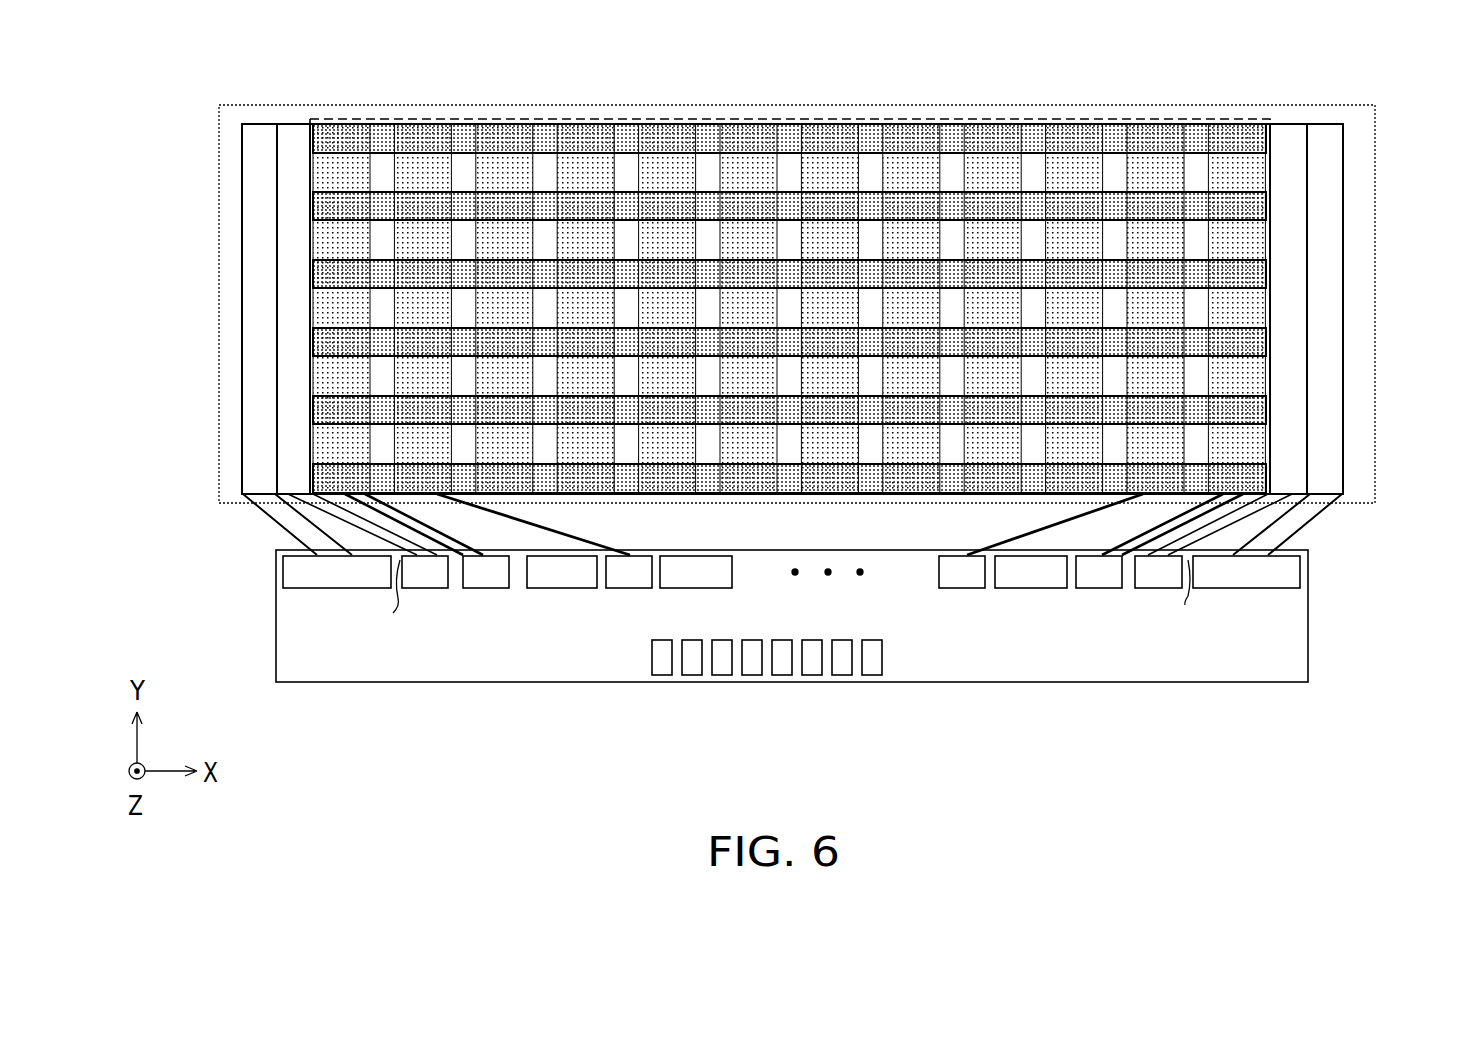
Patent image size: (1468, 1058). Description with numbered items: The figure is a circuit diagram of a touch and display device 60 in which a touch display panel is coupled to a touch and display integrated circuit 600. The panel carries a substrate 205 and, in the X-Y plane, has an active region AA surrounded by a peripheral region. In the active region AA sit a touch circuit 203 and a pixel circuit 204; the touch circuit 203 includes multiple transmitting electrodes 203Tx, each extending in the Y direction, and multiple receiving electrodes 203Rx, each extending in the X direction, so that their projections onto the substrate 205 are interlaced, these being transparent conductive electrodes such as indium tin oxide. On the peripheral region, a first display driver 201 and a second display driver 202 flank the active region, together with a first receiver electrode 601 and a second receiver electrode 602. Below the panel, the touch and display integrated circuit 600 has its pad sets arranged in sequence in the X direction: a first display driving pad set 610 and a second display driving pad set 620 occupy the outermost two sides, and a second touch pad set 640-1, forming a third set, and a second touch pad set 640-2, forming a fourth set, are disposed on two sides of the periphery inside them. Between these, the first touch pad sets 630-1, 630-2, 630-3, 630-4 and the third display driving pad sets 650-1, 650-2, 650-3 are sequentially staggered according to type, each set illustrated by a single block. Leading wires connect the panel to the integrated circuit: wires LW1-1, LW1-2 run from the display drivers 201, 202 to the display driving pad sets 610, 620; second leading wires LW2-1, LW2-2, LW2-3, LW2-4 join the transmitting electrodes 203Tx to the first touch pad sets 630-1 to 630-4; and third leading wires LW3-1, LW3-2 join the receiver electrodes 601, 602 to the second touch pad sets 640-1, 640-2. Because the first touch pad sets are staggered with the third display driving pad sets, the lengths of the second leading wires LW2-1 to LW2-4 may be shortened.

The touch display device 60 is at (1407, 796).
The substrate 205 is at (218, 115).
The first display driver 201 is at (260, 133).
The second display driver 202 is at (1325, 133).
The first receiver electrode 601 is at (297, 133).
The second receiver electrode 602 is at (1290, 133).
The active region AA is at (790, 248).
The touch circuit 203 is at (789, 263).
The pixel circuit 204 is at (1138, 87).
The transmitting electrodes 203Tx is at (347, 167).
The receiving electrodes 203Rx is at (468, 138).
The first display driver wiring LW1-1 is at (283, 515).
The second display driver wiring LW1-2 is at (1307, 517).
The second leading wire LW2-1 is at (412, 523).
The second leading wire LW2-2 is at (572, 535).
The second leading wire LW2-3 is at (1032, 528).
The second leading wire LW2-4 is at (1285, 535).
The third leading wire LW3-1 is at (398, 604).
The third leading wire LW3-2 is at (1185, 601).
The touch and display integrated circuit 600 is at (275, 613).
The first display driving pad set 610 is at (337, 588).
The second display driving pad set 620 is at (1250, 588).
The first touch pad set 630-1 is at (487, 588).
The first touch pad set 630-2 is at (623, 588).
The first touch pad set 630-3 is at (965, 590).
The first touch pad set 630-4 is at (1100, 588).
The second touch pad set 640-1 is at (440, 588).
The second touch pad set 640-2 is at (1145, 588).
The third display driving pad set 650-1 is at (563, 588).
The third display driving pad set 650-2 is at (717, 588).
The third display driving pad set 650-3 is at (1022, 590).